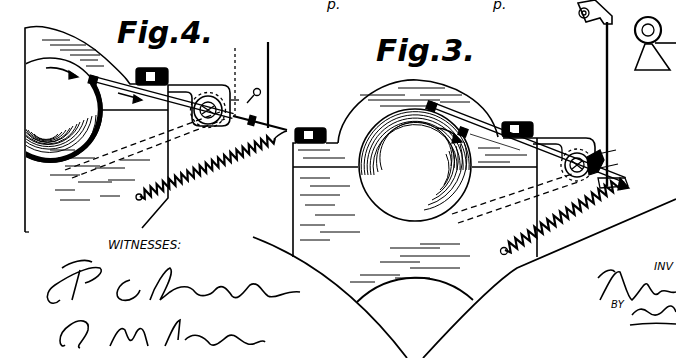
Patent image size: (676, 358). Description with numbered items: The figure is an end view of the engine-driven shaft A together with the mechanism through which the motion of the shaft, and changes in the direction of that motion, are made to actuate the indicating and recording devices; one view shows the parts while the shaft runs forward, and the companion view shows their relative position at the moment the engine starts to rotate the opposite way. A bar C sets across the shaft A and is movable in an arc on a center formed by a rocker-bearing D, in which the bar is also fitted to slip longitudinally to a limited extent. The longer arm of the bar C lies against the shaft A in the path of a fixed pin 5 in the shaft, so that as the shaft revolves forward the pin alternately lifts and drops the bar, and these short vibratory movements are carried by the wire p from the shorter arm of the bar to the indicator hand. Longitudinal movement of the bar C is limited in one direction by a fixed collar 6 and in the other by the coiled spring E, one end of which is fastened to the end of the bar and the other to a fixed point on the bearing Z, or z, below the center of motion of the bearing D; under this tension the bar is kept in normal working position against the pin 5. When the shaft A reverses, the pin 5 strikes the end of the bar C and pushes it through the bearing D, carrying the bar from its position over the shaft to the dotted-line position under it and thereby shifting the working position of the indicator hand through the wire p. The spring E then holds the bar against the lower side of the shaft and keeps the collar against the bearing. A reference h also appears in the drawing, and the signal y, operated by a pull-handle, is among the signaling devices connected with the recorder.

In FIG. 4, the shaft A is at (51, 110).
In FIG. 3, the shaft A is at (366, 130).
In FIG. 4, the fixed pin 5 is at (93, 76).
In FIG. 3, the fixed pin 5 is at (489, 124).
In FIG. 3, the bar C is at (495, 124).
In FIG. 4, the rocker-bearing D is at (199, 116).
In FIG. 3, the rocker-bearing D is at (577, 150).
In FIG. 4, the coiled spring E is at (211, 166).
In FIG. 3, the coiled spring E is at (518, 228).
In FIG. 4, the hook h is at (233, 68).
In FIG. 4, the wire p is at (280, 58).
In FIG. 3, the wire p is at (607, 57).
In FIG. 4, the fixed collar 6 is at (253, 98).
In FIG. 3, the fixed collar 6 is at (612, 163).
In FIG. 3, the signal y is at (655, 55).
In FIG. 4, the bearing Z is at (54, 214).
In FIG. 3, the bearing z is at (297, 204).